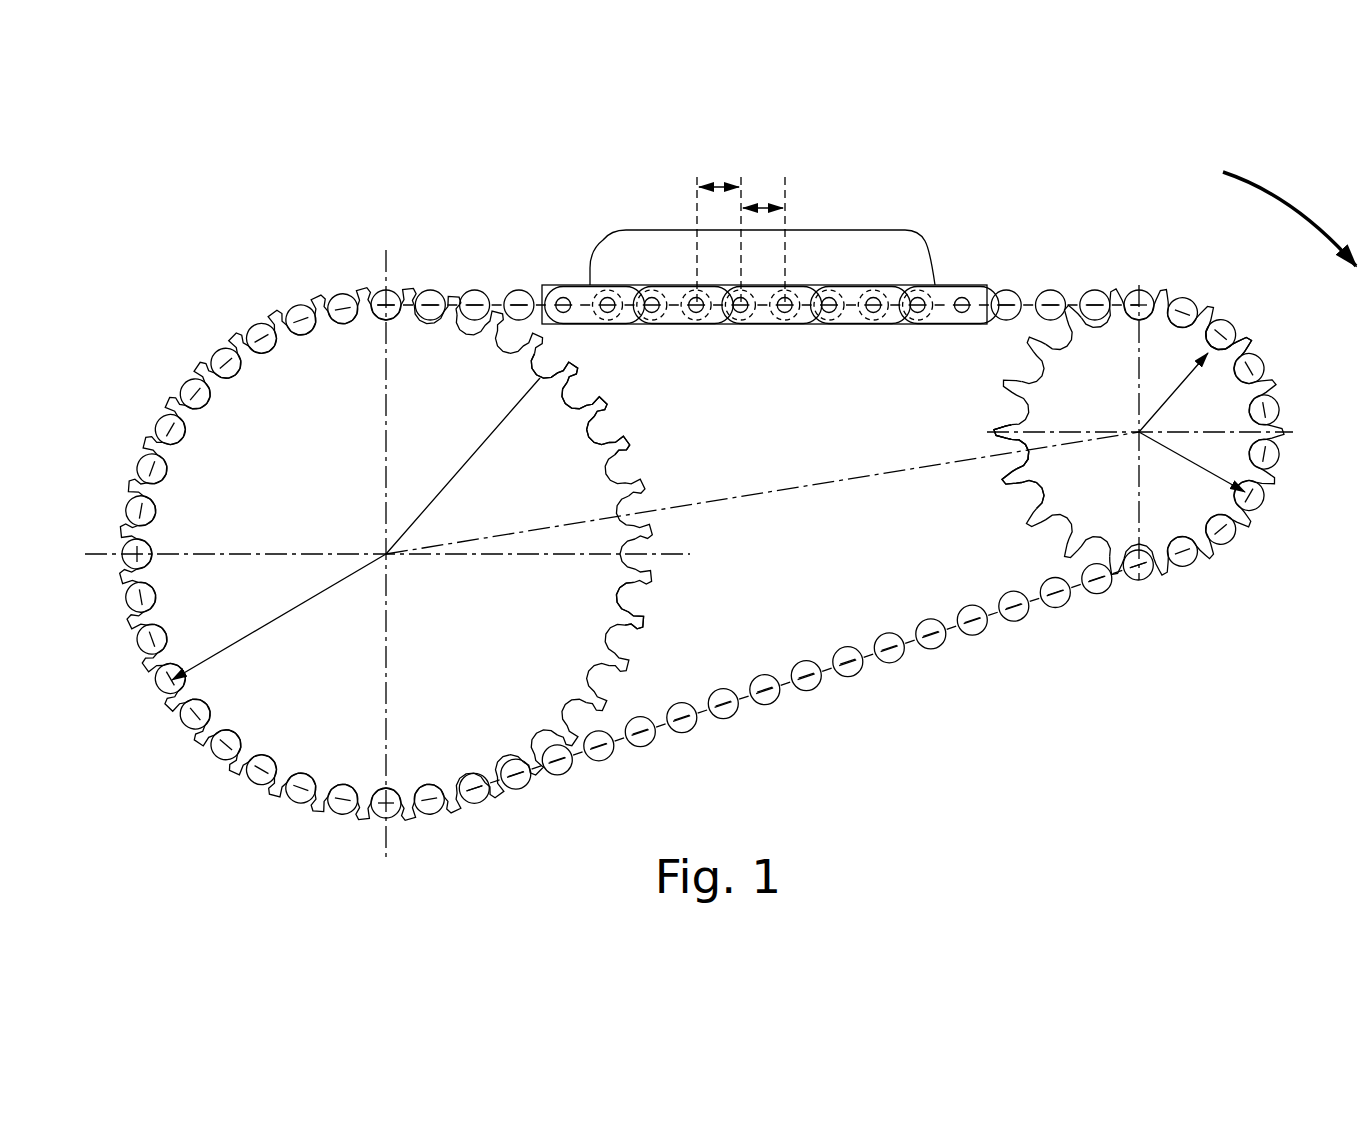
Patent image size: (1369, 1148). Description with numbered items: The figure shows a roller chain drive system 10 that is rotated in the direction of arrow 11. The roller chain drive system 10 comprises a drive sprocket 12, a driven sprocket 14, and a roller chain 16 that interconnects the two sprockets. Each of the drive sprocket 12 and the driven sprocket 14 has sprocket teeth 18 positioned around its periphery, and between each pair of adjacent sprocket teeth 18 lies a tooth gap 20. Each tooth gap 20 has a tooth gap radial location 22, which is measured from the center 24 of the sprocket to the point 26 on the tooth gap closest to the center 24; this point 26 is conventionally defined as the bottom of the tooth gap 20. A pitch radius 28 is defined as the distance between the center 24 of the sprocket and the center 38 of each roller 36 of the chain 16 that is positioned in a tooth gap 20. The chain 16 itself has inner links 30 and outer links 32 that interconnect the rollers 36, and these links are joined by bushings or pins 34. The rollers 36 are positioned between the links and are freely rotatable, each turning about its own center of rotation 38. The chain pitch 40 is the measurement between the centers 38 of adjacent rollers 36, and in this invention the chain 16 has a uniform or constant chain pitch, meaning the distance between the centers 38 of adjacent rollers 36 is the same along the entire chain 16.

The roller chain drive system 10 is at (292, 217).
The arrow 11 is at (1290, 202).
The drive sprocket 12 is at (1082, 500).
The driven sprocket 14 is at (585, 612).
The roller chain 16 is at (572, 285).
The sprocket teeth 18 is at (602, 402).
The tooth gap 20 is at (570, 392).
The tooth gap radial location 22 is at (533, 377).
The center 24 is at (384, 553).
The point 26 is at (545, 382).
The pitch radius 28 is at (262, 633).
The inner links 30 is at (905, 296).
The outer links 32 is at (950, 293).
The pins 34 is at (966, 298).
The roller 36 is at (190, 378).
The center of rotation 38 is at (257, 328).
The chain pitch 40 is at (720, 186).